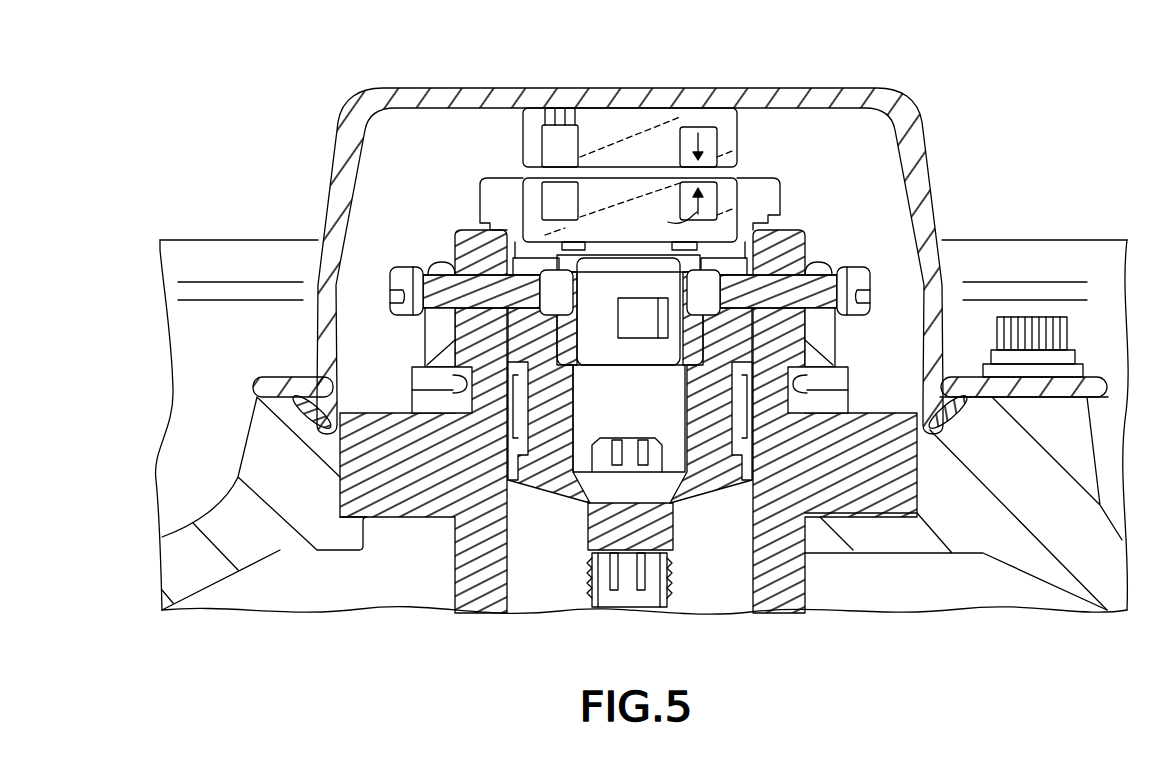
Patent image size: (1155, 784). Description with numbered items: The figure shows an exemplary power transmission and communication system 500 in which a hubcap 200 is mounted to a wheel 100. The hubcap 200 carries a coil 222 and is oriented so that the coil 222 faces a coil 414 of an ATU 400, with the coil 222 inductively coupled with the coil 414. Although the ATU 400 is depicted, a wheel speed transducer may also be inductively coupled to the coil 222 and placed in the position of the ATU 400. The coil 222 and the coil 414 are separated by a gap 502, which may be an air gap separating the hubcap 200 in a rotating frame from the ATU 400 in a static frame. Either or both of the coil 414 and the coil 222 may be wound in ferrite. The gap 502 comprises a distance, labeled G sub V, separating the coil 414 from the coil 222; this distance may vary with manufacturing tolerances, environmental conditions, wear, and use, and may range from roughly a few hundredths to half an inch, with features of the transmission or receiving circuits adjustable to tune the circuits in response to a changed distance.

The wheel 100 is at (183, 567).
The hubcap 200 is at (432, 93).
The coil 222 is at (557, 133).
The ATU 400 is at (493, 212).
The coil 414 is at (553, 197).
The power transmission and communication system 500 is at (253, 125).
The gap 502 is at (727, 172).